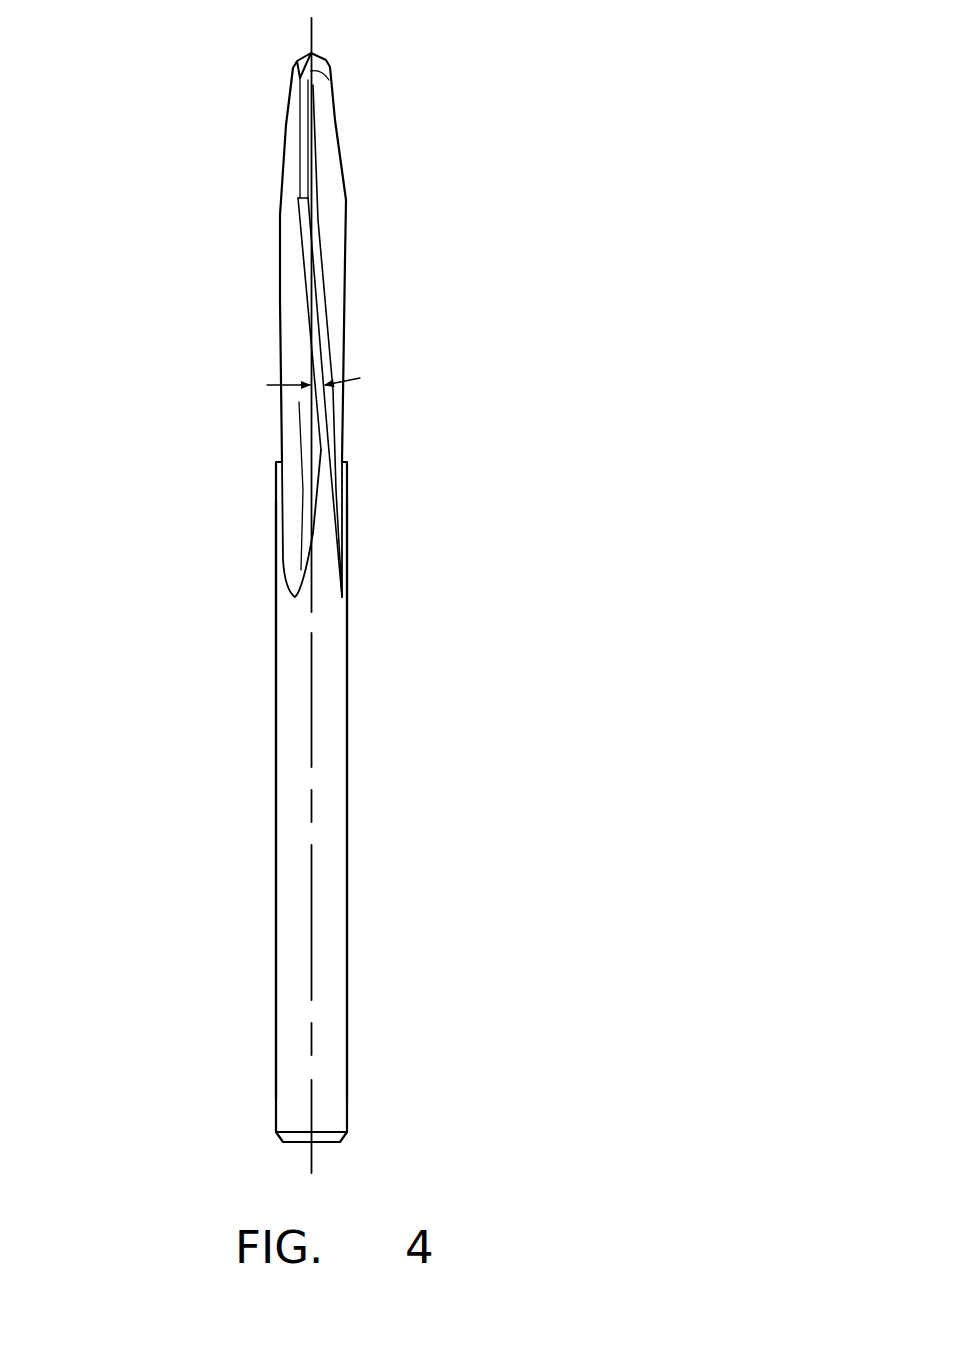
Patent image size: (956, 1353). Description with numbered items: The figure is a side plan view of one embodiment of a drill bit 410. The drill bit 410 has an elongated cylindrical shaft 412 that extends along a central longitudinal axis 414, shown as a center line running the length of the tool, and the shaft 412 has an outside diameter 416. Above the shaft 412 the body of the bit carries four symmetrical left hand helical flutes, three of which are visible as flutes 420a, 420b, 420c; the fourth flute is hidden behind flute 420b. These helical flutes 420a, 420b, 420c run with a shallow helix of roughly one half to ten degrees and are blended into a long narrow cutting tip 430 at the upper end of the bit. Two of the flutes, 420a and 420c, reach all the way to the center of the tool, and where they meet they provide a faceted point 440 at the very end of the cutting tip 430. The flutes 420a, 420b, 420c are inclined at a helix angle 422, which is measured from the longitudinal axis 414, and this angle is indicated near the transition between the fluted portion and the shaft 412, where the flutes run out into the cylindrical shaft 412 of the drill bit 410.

The drill bit 410 is at (618, 237).
The elongated cylindrical shaft 412 is at (416, 393).
The central longitudinal axis 414 is at (311, 690).
The outside diameter 416 is at (347, 830).
The helical flute 420a is at (278, 322).
The helical flute 420b is at (320, 277).
The helical flute 420c is at (345, 337).
The helix angle 422 is at (312, 395).
The cutting tip 430 is at (432, 115).
The faceted point 440 is at (304, 50).